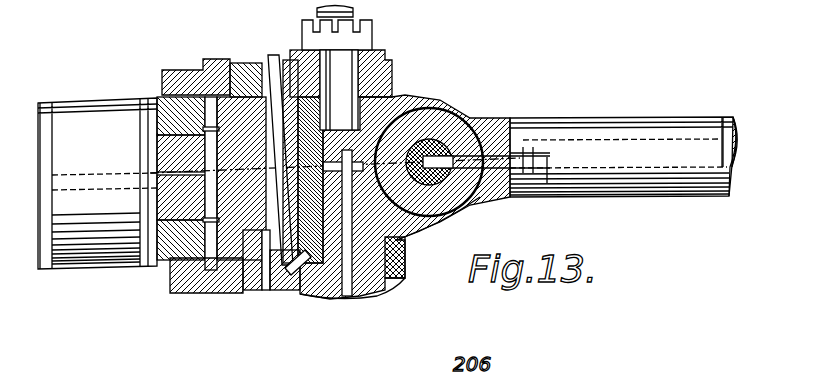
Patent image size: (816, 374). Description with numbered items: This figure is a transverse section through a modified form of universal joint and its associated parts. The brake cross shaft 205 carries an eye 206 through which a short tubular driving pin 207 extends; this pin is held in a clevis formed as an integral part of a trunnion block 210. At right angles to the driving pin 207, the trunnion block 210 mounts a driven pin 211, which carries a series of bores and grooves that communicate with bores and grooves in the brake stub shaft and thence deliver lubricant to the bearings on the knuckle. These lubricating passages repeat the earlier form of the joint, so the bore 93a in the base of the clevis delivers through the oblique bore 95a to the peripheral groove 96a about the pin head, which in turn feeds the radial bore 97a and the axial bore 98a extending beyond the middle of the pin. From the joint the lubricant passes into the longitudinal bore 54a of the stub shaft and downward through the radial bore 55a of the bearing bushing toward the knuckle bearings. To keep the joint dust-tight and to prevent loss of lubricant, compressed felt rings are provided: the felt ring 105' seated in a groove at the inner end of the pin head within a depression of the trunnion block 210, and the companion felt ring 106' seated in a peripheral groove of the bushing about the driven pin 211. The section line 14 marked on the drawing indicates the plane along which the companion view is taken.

The pin / axis 14 is at (192, 206).
The radial bore 55a is at (172, 262).
The longitudinal bore 54a is at (198, 283).
The trunnion block 210 is at (233, 258).
The bore 93a is at (280, 267).
The oblique bore 95a is at (302, 258).
The radial bore 97a is at (333, 296).
The axial bore 98a is at (393, 108).
The felt ring 106' is at (316, 135).
The driven pin 211 is at (343, 90).
The peripheral groove 96a is at (402, 257).
The felt ring 105' is at (370, 297).
The eye 206 is at (440, 140).
The tubular driving pin 207 is at (483, 122).
The brake cross shaft 205 is at (623, 130).